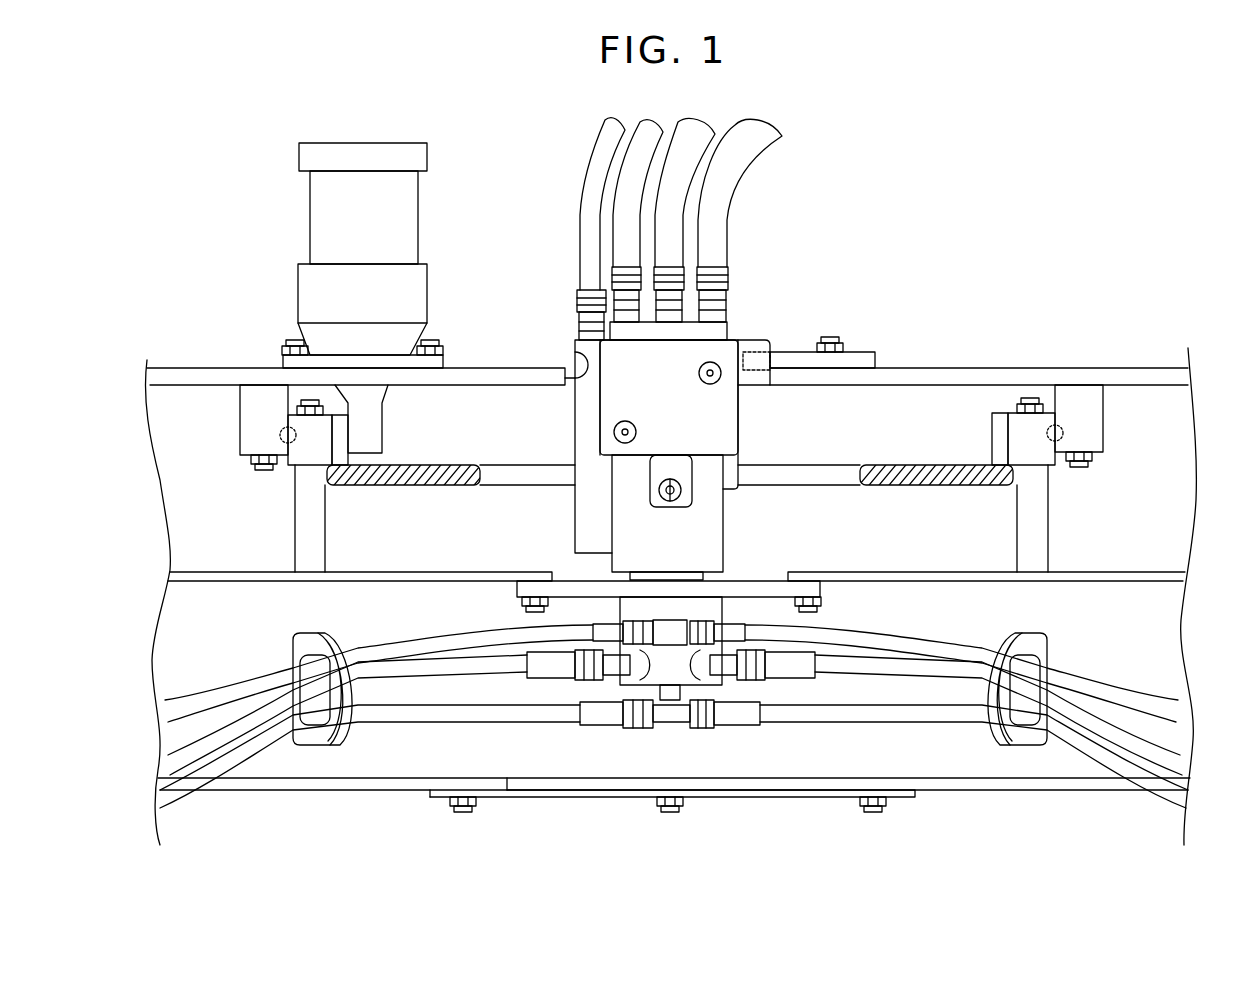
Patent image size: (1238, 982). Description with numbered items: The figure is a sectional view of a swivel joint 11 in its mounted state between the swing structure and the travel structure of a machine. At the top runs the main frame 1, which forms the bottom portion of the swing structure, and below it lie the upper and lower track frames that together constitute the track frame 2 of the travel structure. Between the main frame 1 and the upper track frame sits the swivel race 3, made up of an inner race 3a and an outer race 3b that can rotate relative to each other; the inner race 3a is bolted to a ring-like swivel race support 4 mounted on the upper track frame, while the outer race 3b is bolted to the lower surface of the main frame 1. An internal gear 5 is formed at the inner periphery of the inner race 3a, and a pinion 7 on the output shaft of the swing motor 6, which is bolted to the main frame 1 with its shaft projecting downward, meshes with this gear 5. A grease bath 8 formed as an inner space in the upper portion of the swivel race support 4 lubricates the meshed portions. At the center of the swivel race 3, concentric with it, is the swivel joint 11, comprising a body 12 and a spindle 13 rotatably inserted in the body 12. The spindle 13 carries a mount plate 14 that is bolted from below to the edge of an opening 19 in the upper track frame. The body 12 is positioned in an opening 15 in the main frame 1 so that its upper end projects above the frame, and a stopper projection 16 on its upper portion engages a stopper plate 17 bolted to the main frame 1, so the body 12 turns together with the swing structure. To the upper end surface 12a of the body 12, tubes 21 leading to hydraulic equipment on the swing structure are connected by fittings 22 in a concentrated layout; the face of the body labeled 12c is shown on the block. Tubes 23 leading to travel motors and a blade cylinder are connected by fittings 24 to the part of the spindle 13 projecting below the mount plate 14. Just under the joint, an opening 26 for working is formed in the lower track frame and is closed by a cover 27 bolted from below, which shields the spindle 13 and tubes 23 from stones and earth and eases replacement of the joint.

The main frame 1 is at (938, 368).
The track frame 2 is at (1128, 571).
The swivel race 3 is at (1112, 447).
The inner race 3a is at (300, 456).
The outer race 3b is at (250, 420).
The swivel race support 4 is at (302, 540).
The internal gear 5 is at (350, 442).
The swing motor 6 is at (310, 222).
The pinion 7 is at (375, 420).
The grease bath 8 is at (458, 465).
The swivel joint 11 is at (727, 522).
The body 12 is at (738, 412).
The upper end surface 12a is at (655, 340).
The manifold face 12c is at (657, 430).
The spindle 13 is at (620, 612).
The mount plate 14 is at (822, 592).
The opening 15 is at (575, 352).
The stopper projection 16 is at (750, 347).
The stopper plate 17 is at (800, 352).
The opening 19 is at (560, 581).
The tubes 21 is at (597, 182).
The fittings 22 is at (580, 300).
The tubes 23 is at (388, 645).
The fittings 24 is at (672, 620).
The opening 26 is at (838, 792).
The cover 27 is at (557, 797).